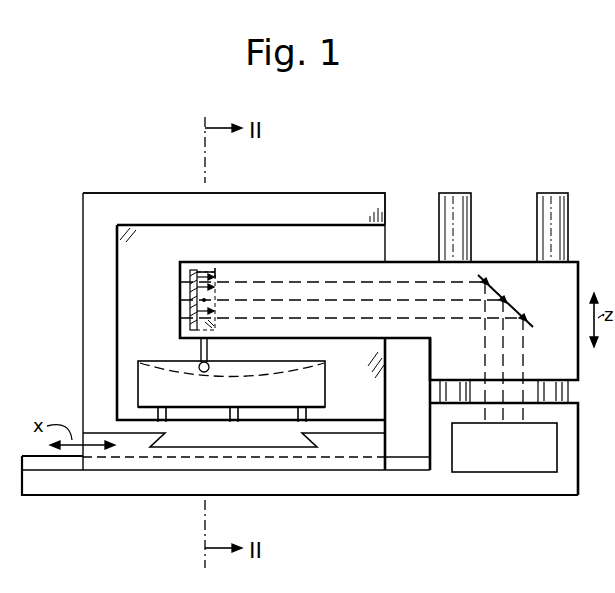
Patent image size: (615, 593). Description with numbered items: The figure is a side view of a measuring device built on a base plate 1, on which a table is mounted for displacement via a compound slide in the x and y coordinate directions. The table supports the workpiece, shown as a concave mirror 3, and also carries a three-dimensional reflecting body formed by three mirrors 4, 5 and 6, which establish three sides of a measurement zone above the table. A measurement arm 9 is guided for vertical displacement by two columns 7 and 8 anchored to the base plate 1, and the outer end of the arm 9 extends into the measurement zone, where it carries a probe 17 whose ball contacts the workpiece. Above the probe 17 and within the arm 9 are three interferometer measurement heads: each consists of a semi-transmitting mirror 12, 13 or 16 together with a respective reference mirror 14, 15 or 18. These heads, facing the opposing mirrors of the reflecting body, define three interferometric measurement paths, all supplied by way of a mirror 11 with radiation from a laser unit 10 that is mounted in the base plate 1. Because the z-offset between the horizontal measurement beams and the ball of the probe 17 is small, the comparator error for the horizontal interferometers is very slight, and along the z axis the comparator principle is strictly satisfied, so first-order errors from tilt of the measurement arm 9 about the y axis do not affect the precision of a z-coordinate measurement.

The base plate 1 is at (285, 483).
The concave mirror 3 is at (150, 386).
The mirror 4 is at (94, 268).
The mirror 5 is at (117, 237).
The mirror 6 is at (338, 205).
The column 7 is at (455, 200).
The column 8 is at (553, 200).
The measurement arm 9 is at (579, 272).
The laser unit 10 is at (497, 460).
The mirror 11 is at (500, 288).
The semi-transmitting mirror 12 is at (188, 282).
The semi-transmitting mirror 13 is at (195, 318).
The reference mirror 14 is at (193, 272).
The reference mirror 15 is at (217, 340).
The semi-transmitting mirror 16 is at (195, 298).
The probe 17 is at (200, 365).
The reference mirror 18 is at (181, 291).